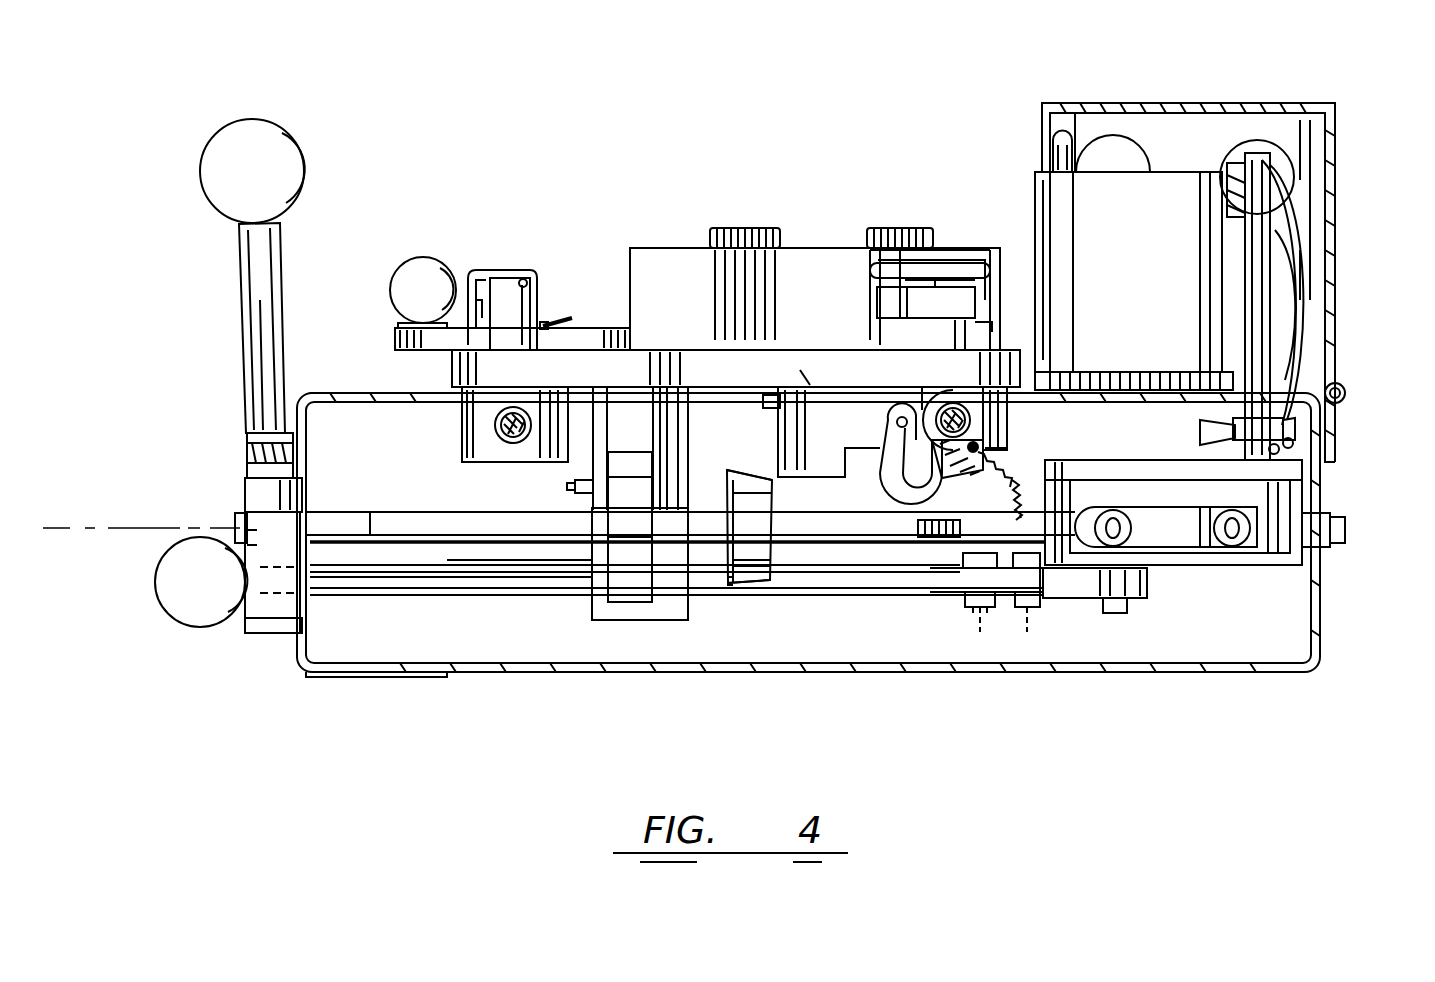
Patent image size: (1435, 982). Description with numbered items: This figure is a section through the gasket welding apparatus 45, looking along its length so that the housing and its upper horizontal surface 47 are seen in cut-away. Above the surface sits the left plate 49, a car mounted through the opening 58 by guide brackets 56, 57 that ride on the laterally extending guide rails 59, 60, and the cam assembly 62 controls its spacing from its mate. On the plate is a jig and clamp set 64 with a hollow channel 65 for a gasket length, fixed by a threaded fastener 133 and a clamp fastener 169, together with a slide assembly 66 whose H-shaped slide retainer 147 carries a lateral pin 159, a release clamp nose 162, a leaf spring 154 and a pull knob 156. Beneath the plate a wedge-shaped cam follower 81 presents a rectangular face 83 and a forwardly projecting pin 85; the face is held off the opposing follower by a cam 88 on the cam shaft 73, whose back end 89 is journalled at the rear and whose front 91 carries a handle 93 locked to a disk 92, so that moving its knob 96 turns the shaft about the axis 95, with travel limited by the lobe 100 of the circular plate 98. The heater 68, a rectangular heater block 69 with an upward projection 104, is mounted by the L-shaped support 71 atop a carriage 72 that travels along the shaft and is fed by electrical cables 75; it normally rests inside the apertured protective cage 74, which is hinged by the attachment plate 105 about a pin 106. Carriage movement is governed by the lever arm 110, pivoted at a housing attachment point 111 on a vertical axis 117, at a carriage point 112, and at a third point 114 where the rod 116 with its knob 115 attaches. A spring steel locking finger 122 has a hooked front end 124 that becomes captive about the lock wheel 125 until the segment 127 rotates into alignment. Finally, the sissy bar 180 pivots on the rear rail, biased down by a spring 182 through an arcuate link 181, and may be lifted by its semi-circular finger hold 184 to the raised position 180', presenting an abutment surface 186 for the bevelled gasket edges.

The apparatus 45 is at (940, 88).
The upper horizontal surface 47 is at (1320, 607).
The left plate 49 is at (452, 370).
The guide bracket 56 is at (470, 440).
The guide bracket 57 is at (1003, 437).
The opening 58 is at (427, 403).
The guide rail 59 is at (512, 443).
The rear guide rail 60 is at (1003, 418).
The cam assembly 62 is at (578, 617).
The jig and clamp set 64 is at (848, 224).
The hollow channel 65 is at (883, 303).
The slide assembly 66 is at (497, 224).
The heater 68 is at (1027, 202).
The heater block 69 is at (1150, 236).
The L-shaped support 71 is at (1262, 236).
The carriage 72 is at (1233, 551).
The cam shaft 73 is at (447, 523).
The apertured protective cage 74 is at (1210, 103).
The electrical cables 75 is at (1300, 307).
The left cam follower 81 is at (678, 458).
The rectangular face 83 is at (663, 598).
The pin 85 is at (567, 488).
The cam 88 is at (628, 470).
The back end of shaft 89 is at (1346, 530).
The front of shaft 91 is at (233, 518).
The disk 92 is at (265, 632).
The handle 93 is at (246, 262).
The axis 95 is at (63, 526).
The knob 96 is at (200, 178).
The circular plate 98 is at (296, 655).
The lobe 100 is at (263, 497).
The upward projection 104 is at (1055, 145).
The hinge attachment plate 105 is at (1336, 450).
The pin 106 is at (1346, 388).
The lever arm 110 is at (1138, 600).
The pivotal attachment point 111 is at (985, 620).
The second pivotal attachment point 112 is at (1108, 613).
The third pivotal attachment point 114 is at (1030, 617).
The knob 115 is at (192, 615).
The rod 116 is at (447, 575).
The vertical axis 117 is at (985, 630).
The spring steel locking finger 122 is at (1170, 535).
The hooked front end 124 is at (957, 540).
The lock wheel 125 is at (755, 590).
The segment 127 is at (743, 595).
The threaded fastener 133 is at (893, 230).
The H-shaped slide retainer 147 is at (503, 283).
The leaf spring 154 is at (553, 320).
The knob 156 is at (413, 262).
The lateral pin 159 is at (530, 275).
The nose 162 is at (480, 270).
The threaded fastener 169 is at (735, 230).
The sissy bar 180 is at (716, 297).
The raised position of sissy bar 180' is at (1049, 313).
The arcuate link 181 is at (893, 487).
The spring 182 is at (983, 481).
The reduced semi-circular portion 184 is at (763, 403).
The surface 186 is at (832, 468).